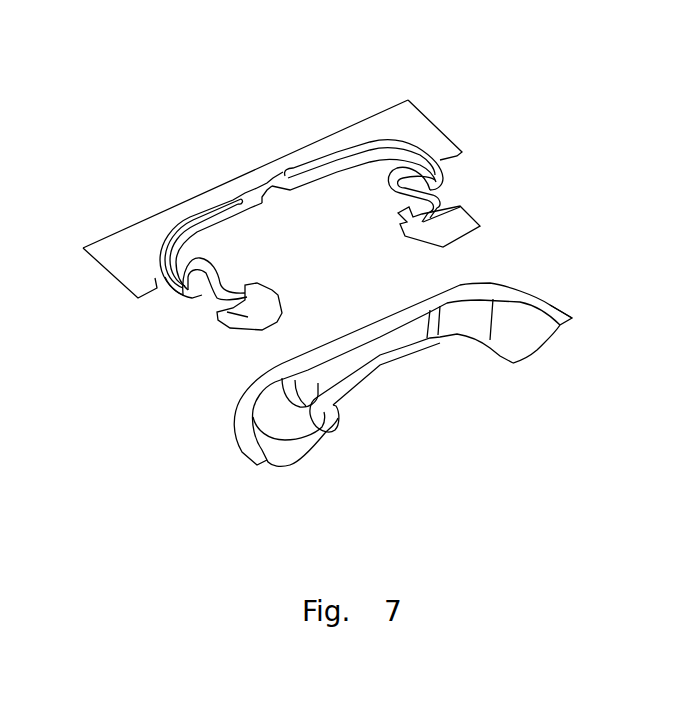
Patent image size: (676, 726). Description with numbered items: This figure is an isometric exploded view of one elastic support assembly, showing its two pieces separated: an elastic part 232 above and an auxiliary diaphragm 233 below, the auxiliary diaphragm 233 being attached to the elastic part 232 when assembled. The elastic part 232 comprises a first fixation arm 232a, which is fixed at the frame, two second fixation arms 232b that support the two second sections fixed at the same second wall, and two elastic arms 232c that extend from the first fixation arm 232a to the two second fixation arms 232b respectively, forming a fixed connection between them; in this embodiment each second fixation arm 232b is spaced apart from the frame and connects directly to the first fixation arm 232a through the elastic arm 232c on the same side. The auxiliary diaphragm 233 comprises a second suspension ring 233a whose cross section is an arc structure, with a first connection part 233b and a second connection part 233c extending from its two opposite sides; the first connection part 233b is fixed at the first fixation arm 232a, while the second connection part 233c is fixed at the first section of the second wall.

The elastic part 232 is at (317, 15).
The first fixation arm 232a is at (259, 185).
The second fixation arm 232b is at (165, 285).
The elastic arm 232c is at (205, 228).
The auxiliary diaphragm 233 is at (568, 446).
The second suspension ring 233a is at (366, 354).
The first connection part 233b is at (284, 362).
The second connection part 233c is at (428, 345).